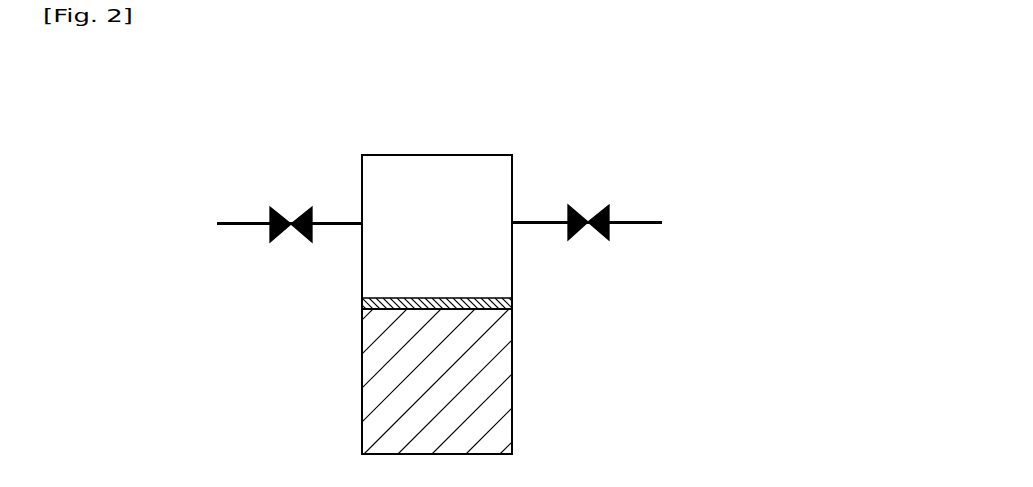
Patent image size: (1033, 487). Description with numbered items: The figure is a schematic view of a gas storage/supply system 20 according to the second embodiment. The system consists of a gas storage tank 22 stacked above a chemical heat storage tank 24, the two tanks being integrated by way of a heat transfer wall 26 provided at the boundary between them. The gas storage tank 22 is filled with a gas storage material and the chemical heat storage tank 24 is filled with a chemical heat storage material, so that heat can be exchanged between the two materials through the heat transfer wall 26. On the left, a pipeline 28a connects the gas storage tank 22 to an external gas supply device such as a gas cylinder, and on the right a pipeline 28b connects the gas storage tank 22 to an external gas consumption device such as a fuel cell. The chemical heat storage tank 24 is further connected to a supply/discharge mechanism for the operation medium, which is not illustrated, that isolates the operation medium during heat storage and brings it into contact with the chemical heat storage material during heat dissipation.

The gas storage/supply system 20 is at (728, 84).
The gas storage tank 22 is at (412, 154).
The chemical heat storage tank 24 is at (512, 395).
The heat transfer wall 26 is at (512, 302).
The pipeline 28a is at (231, 223).
The pipeline 28b is at (625, 222).